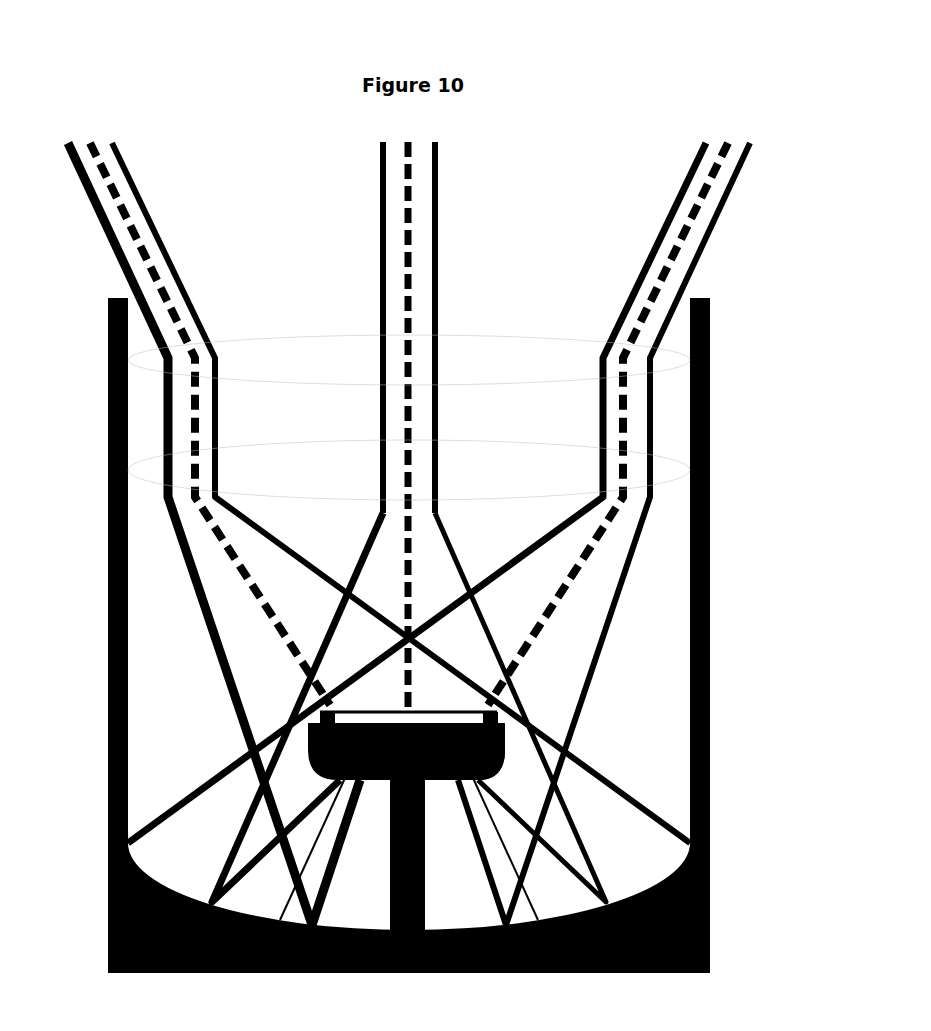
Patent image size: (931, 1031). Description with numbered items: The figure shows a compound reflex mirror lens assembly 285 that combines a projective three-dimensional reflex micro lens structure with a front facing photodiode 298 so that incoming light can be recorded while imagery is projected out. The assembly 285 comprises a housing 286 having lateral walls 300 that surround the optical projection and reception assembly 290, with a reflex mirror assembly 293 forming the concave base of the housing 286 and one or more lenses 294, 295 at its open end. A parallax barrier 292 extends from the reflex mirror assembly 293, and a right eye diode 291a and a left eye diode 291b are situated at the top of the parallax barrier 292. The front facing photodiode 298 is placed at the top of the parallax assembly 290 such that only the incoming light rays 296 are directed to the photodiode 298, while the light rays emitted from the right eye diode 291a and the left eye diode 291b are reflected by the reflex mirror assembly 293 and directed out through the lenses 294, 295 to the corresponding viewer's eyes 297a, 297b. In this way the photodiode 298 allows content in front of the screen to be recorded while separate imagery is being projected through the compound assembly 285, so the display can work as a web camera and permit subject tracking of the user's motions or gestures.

The compound reflex mirror lens assembly 285 is at (382, 635).
The housing 286 is at (91, 570).
The optical projection and reception assembly 290 is at (340, 714).
The right eye diode 291a is at (505, 750).
The left eye diode 291b is at (255, 977).
The parallax barrier 292 is at (435, 840).
The reflex mirror assembly 293 is at (565, 973).
The lens 294 is at (409, 470).
The lens 295 is at (409, 359).
The incoming light rays 296 is at (410, 298).
The viewer's right eye 297a is at (383, 217).
The viewer's left eye 297b is at (437, 262).
The front facing photodiode 298 is at (430, 427).
The lateral walls 300 is at (409, 534).